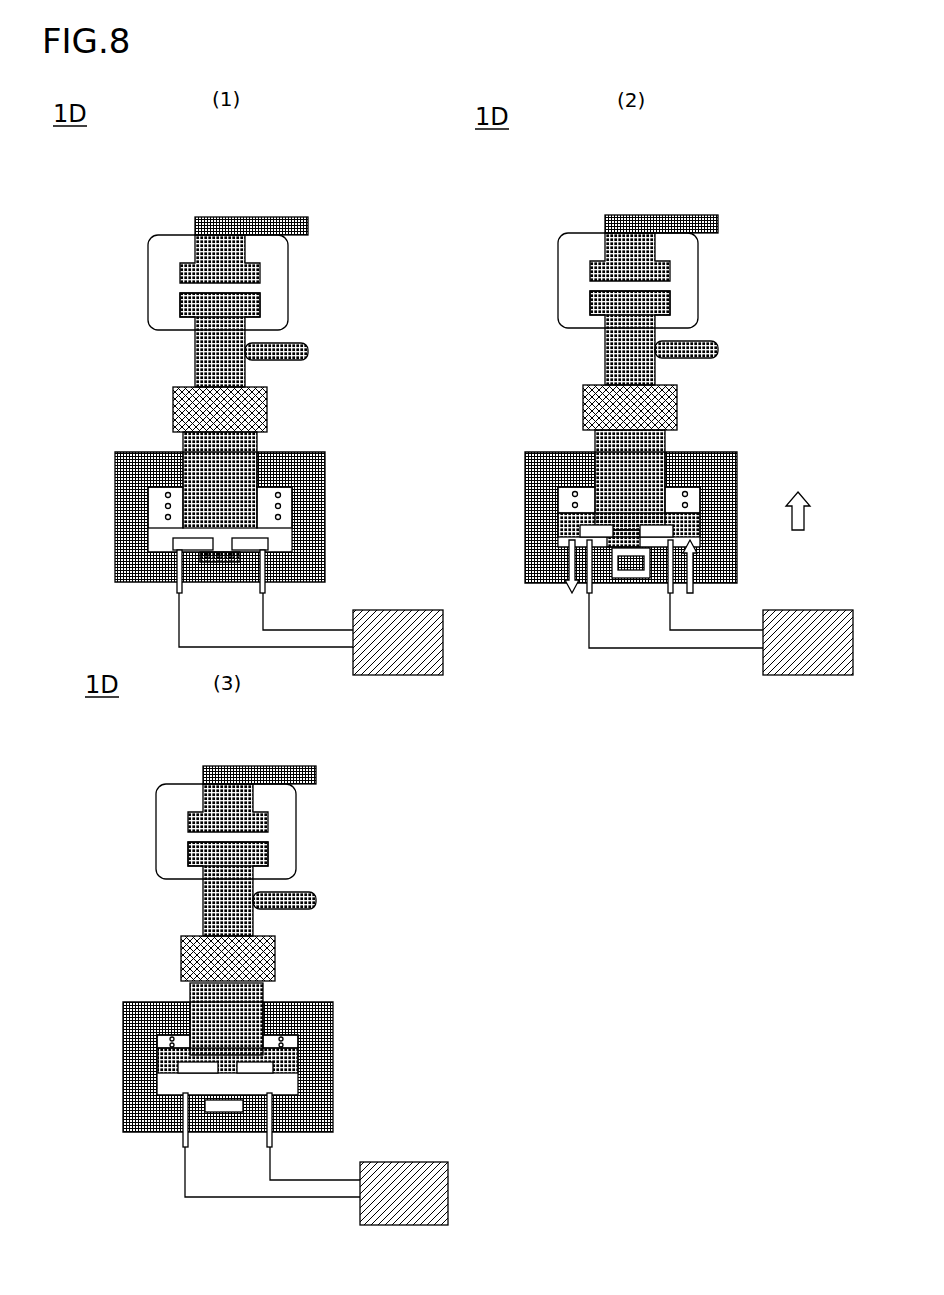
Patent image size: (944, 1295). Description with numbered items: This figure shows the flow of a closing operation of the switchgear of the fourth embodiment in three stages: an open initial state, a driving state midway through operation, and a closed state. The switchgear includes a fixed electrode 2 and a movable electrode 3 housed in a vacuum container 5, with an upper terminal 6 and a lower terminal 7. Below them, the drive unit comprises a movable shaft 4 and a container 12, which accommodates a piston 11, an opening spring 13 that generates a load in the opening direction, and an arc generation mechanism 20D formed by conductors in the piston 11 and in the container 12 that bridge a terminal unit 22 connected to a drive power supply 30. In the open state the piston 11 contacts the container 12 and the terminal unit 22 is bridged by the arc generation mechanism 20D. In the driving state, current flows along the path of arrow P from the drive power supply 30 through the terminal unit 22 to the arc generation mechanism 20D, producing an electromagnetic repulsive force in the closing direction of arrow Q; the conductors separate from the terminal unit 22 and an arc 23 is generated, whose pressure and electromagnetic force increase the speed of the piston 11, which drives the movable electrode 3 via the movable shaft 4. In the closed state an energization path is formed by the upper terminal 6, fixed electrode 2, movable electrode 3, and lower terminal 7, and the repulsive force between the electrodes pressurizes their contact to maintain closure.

The fixed electrode 2 is at (195, 248).
The movable electrode 3 is at (180, 297).
The movable shaft 4 is at (267, 395).
The vacuum container 5 is at (288, 283).
The upper terminal 6 is at (280, 217).
The lower terminal 7 is at (307, 350).
The piston 11 is at (227, 457).
The container 12 is at (323, 520).
The opening spring 13 is at (158, 498).
The arc generation mechanism 20D is at (247, 540).
The terminal unit 22 is at (262, 590).
The arc 23 is at (703, 527).
The drive power supply 30 is at (373, 620).
The arrow P is at (691, 590).
The arrow Q is at (812, 511).